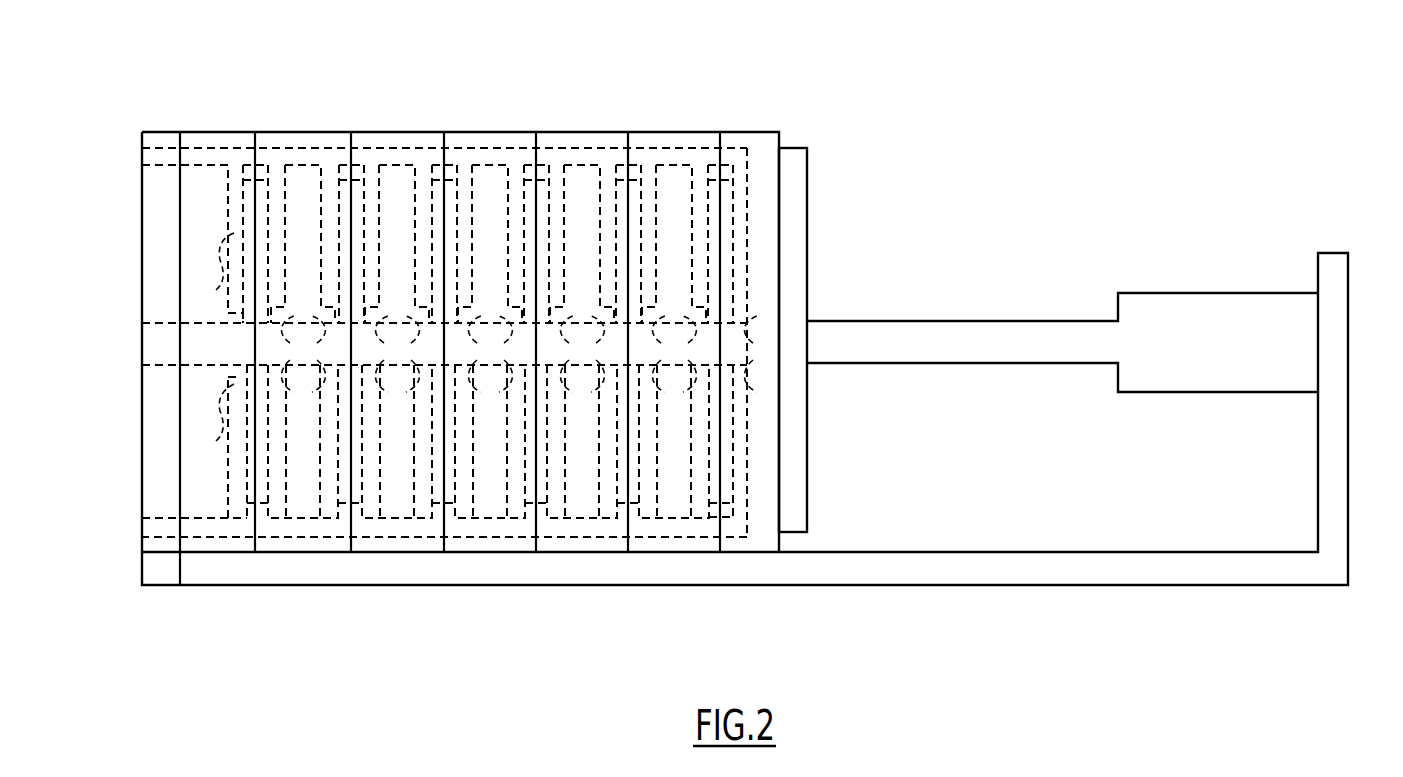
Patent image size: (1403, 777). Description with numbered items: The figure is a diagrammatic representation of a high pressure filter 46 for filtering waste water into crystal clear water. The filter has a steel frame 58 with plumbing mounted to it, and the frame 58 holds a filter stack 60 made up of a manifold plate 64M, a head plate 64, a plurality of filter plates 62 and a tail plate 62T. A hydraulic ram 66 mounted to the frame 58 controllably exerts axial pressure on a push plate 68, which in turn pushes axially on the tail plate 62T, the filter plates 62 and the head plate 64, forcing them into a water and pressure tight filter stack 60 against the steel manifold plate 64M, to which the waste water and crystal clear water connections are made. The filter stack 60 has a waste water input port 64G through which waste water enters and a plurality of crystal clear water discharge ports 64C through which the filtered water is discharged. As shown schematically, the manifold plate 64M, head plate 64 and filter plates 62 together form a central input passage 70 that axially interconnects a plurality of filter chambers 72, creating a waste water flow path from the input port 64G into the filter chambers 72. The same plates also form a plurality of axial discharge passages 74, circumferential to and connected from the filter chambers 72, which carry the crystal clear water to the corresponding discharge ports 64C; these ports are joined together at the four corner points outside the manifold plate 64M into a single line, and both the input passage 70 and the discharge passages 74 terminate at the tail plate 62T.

The high pressure filter 46 is at (1125, 48).
The frame 58 is at (1348, 462).
The filter stack 60 is at (558, 682).
The filter plates 62 is at (682, 110).
The tail plate 62T is at (752, 110).
The head plate 64 is at (215, 83).
The manifold plate 64M is at (157, 130).
The crystal clear water discharge ports 64C is at (126, 161).
The waste water input port 64G is at (126, 354).
The hydraulic ram 66 is at (1210, 293).
The push plate 68 is at (807, 250).
The input passage 70 is at (238, 365).
The filter chambers 72 is at (484, 345).
The discharge passages 74 is at (422, 147).